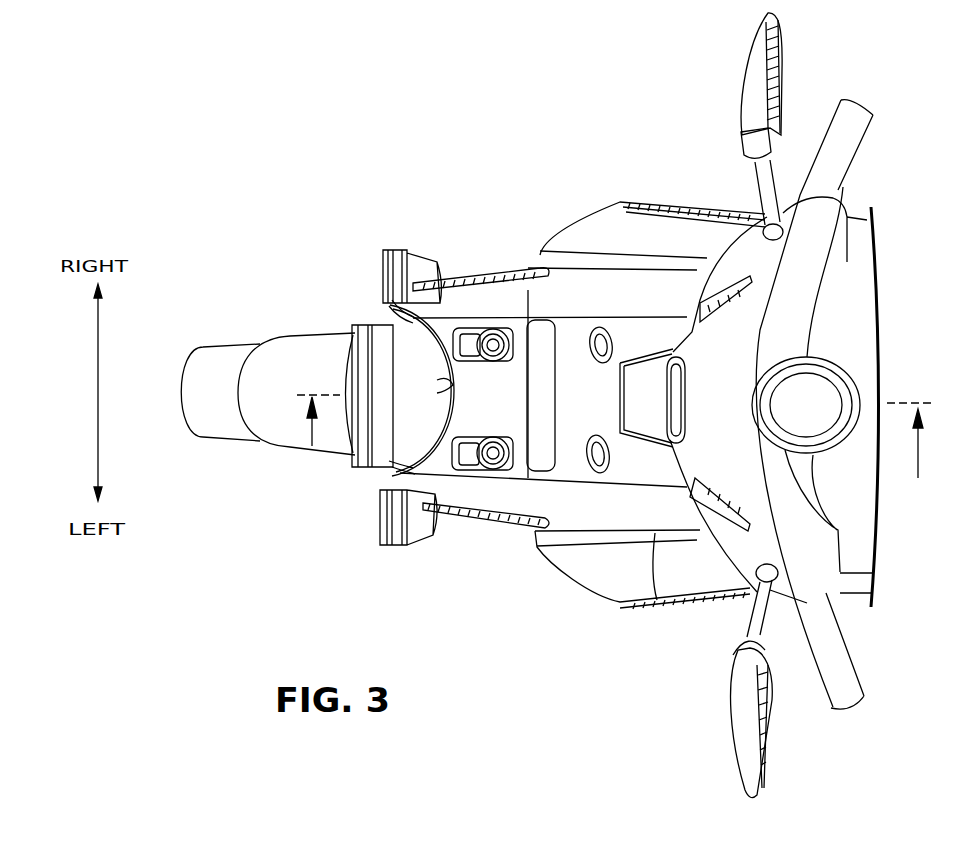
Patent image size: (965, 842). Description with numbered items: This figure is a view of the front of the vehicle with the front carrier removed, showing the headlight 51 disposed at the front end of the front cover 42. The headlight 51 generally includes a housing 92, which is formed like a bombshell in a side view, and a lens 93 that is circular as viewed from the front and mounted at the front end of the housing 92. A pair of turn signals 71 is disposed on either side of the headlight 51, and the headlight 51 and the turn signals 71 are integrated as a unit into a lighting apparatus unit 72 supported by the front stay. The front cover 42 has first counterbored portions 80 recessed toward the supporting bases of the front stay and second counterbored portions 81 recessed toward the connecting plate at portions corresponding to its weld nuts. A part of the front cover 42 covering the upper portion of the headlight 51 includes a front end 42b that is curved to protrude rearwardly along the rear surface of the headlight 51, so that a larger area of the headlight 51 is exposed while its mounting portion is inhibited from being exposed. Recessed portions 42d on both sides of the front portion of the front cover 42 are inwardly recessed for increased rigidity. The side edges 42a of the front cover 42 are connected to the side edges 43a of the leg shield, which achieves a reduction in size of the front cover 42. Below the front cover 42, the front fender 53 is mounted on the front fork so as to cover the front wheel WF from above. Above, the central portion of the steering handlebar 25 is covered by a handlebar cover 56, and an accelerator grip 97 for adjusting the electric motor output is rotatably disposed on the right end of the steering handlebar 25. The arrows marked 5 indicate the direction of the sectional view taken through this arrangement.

The front wheel WF is at (207, 368).
The front fender 53 is at (250, 407).
The headlight 51 is at (345, 425).
The lens 93 is at (346, 380).
The lighting apparatus unit 72 is at (352, 318).
The turn signals 71 is at (383, 268).
The housing 92 is at (415, 427).
The recessed portions 42d is at (476, 277).
The front cover 42 is at (503, 303).
The front end 42b is at (455, 393).
The second counterbored portions 81 is at (592, 328).
The first counterbored portions 80 is at (480, 338).
The side edges 42a is at (614, 266).
The side edges 43a is at (647, 275).
The handlebar cover 56 is at (827, 262).
The accelerator grip 97 is at (850, 145).
The steering handlebar 25 is at (855, 712).
The section line for FIG. 5 is at (615, 436).